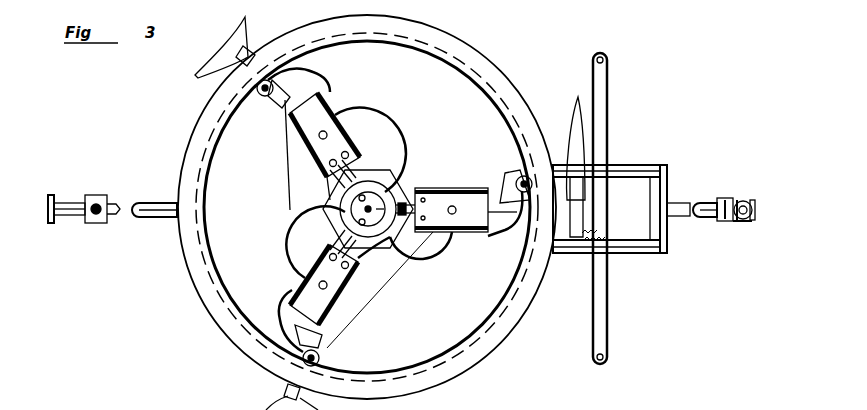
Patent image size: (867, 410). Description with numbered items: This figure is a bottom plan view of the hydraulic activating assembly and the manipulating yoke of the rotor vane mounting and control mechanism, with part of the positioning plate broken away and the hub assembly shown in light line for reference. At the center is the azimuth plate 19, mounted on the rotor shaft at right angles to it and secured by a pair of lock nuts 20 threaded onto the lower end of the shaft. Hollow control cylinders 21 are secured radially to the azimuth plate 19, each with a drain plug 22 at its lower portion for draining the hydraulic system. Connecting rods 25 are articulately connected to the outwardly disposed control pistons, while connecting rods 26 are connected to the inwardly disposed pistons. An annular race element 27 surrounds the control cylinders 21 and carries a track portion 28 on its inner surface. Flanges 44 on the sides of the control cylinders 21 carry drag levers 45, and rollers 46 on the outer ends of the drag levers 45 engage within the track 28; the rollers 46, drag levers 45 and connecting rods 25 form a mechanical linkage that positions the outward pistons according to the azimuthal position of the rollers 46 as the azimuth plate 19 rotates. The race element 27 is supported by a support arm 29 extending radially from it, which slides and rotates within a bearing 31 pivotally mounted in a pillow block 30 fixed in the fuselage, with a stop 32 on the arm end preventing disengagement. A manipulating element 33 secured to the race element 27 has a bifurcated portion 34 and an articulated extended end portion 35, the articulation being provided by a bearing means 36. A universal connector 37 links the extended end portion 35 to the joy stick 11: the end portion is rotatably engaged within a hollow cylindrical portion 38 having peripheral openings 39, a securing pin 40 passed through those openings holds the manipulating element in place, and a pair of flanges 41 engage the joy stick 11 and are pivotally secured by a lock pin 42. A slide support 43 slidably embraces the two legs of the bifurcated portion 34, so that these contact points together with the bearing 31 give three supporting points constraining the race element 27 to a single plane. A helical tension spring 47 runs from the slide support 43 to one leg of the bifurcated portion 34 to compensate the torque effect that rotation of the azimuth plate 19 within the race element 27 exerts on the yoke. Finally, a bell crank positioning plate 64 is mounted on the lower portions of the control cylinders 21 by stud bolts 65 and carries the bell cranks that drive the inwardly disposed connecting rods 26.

The joy stick 11 is at (754, 213).
The azimuth plate 19 is at (318, 178).
The lock nuts 20 is at (392, 197).
The control cylinders 21 is at (342, 113).
The drain plug 22 is at (320, 140).
The connecting rods 25 is at (293, 92).
The connecting rods 26 is at (397, 207).
The annular race element 27 is at (485, 363).
The track portion 28 is at (487, 335).
The support arm 29 is at (148, 203).
The pillow block 30 is at (92, 220).
The bearing 31 is at (105, 222).
The stop 32 is at (53, 193).
The manipulating element 33 is at (673, 157).
The bifurcated portion 34 is at (637, 257).
The extended end portion 35 is at (708, 203).
The bearing means 36 is at (667, 187).
The universal connector 37 is at (740, 183).
The hollow cylindrical portion 38 is at (720, 222).
The peripheral openings 39 is at (726, 222).
The securing pin 40 is at (743, 185).
The flanges 41 is at (750, 203).
The lock pin 42 is at (745, 223).
The slide support 43 is at (608, 96).
The flanges 44 is at (338, 100).
The drag levers 45 is at (313, 72).
The rollers 46 is at (255, 93).
The helical tension spring 47 is at (580, 202).
The bell crank positioning plate 64 is at (330, 237).
The stud bolts 65 is at (428, 200).